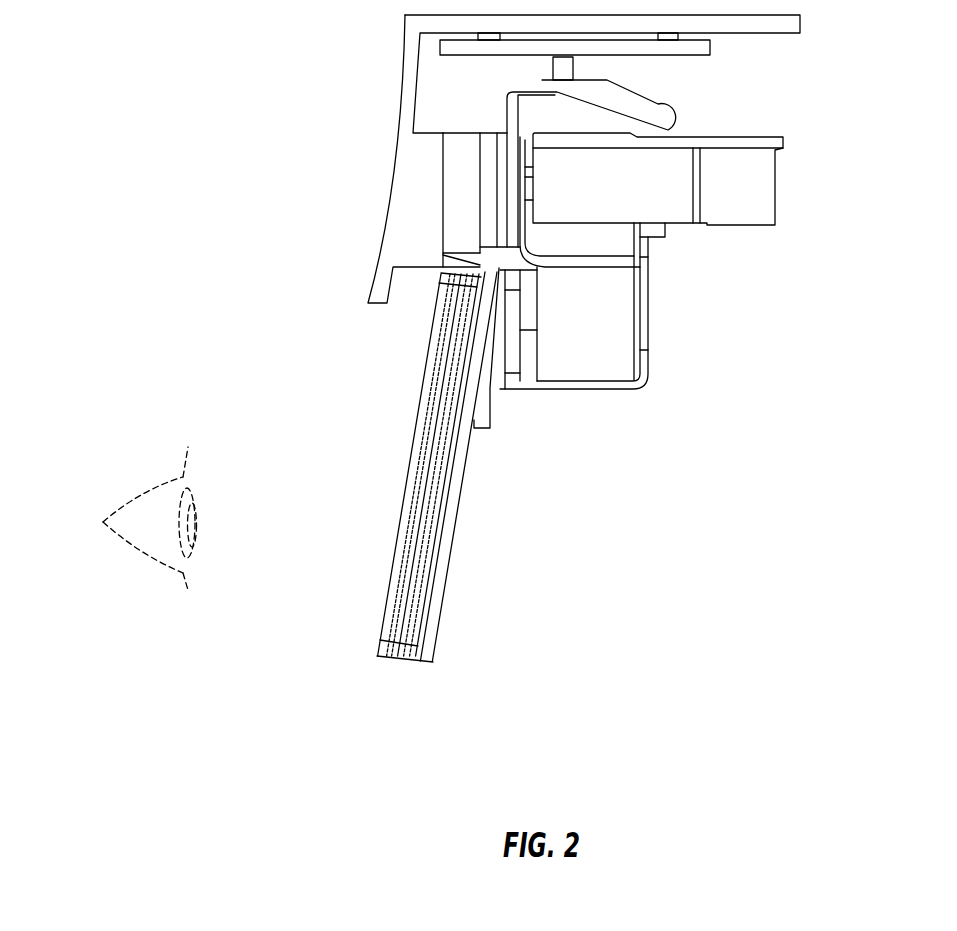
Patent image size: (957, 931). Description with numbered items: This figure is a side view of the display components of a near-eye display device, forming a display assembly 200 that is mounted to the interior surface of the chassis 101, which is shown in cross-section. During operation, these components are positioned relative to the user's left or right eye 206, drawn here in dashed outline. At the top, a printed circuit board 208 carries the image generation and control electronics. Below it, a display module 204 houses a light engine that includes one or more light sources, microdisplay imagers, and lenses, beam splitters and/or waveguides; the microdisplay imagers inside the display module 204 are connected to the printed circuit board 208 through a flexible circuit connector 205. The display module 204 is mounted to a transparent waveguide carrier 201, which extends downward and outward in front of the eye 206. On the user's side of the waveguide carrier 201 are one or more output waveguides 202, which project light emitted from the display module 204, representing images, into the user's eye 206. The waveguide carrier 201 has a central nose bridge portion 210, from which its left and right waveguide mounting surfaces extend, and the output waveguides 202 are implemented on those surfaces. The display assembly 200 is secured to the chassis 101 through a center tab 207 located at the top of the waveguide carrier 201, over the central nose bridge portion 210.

The display assembly 200 is at (822, 128).
The chassis 101 is at (392, 182).
The waveguide carrier 201 is at (440, 625).
The output waveguides 202 is at (415, 534).
The display module 204 is at (676, 300).
The flexible circuit connector 205 is at (678, 123).
The eye 206 is at (193, 507).
The center tab 207 is at (442, 232).
The printed circuit board 208 is at (458, 58).
The central nose bridge portion 210 is at (490, 413).